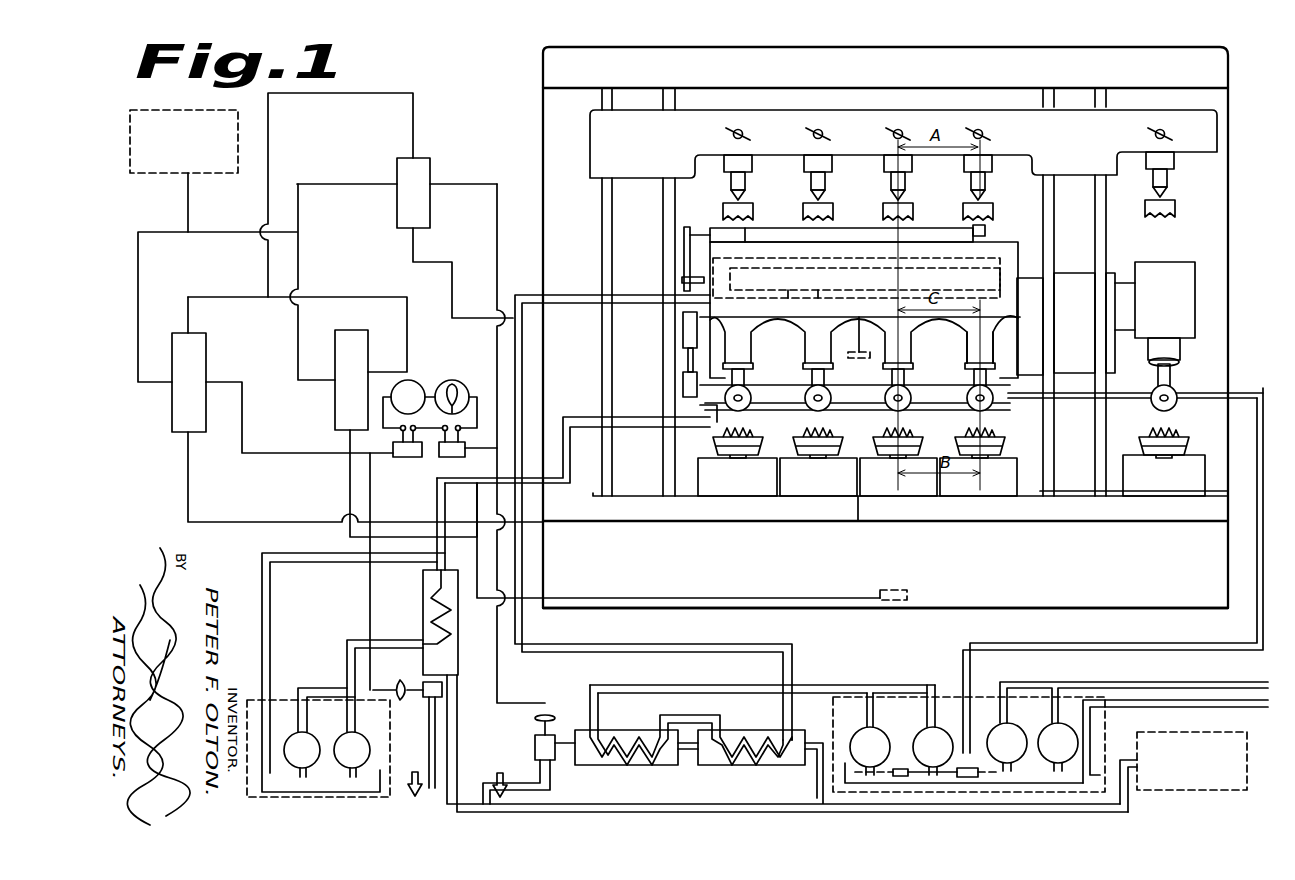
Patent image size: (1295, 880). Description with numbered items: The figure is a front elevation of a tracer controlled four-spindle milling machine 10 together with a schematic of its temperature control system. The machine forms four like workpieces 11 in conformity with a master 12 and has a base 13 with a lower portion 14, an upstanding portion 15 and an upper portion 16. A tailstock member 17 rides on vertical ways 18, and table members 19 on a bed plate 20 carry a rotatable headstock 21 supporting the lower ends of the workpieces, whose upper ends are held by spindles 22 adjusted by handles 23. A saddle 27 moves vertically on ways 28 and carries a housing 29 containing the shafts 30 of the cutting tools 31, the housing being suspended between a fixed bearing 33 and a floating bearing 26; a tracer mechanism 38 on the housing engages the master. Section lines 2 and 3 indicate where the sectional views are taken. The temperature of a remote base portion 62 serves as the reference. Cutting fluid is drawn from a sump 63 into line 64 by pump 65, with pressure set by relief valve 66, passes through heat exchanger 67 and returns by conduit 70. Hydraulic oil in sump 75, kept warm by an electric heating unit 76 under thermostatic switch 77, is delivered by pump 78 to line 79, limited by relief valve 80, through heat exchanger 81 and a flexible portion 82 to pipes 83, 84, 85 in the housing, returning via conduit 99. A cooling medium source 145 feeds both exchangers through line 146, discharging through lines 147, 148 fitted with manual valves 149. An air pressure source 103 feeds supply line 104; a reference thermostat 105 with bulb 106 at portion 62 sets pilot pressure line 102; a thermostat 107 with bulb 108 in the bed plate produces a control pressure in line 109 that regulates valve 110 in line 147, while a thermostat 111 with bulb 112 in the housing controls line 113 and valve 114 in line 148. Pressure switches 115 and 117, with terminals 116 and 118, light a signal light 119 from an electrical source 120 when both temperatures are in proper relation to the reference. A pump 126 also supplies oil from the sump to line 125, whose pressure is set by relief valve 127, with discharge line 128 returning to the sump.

The section line 2- 2 is at (530, 123).
The direction arrows 3 is at (883, 220).
The milling machine 10 is at (1241, 190).
The workpieces 11 is at (908, 210).
The master 12 is at (1180, 204).
The base 13 is at (1146, 608).
The lower portion 14 is at (885, 547).
The upstanding portion 15 is at (1111, 292).
The upper portion 16 is at (885, 70).
The tailstock member 17 is at (590, 146).
The vertical rails 18 is at (601, 219).
The table members 19 is at (951, 475).
The bed plate 20 is at (953, 499).
The headstock 21 is at (1004, 443).
The spindles 22 is at (884, 186).
The handles 23 is at (724, 131).
The floating bearing 26 is at (752, 222).
The saddle 27 is at (706, 226).
The ways 28 is at (752, 186).
The housing 29 is at (968, 336).
The shafts 30 is at (964, 367).
The cutting tools 31 is at (976, 392).
The fixed bearing 33 is at (986, 232).
The tracer mechanism 38 is at (1165, 336).
The portion of the base 62 is at (910, 598).
The sump 63 is at (290, 794).
The line 64 is at (347, 648).
The pump 65 is at (370, 726).
The relief valve 66 is at (306, 733).
The heat exchanger 67 is at (423, 590).
The conduit 70 is at (264, 610).
The sump 75 is at (1097, 767).
The electric heating unit 76 is at (1000, 776).
The thermostatic switch 77 is at (890, 773).
The pump 78 is at (924, 730).
The line 79 is at (815, 686).
The relief valve 80 is at (864, 729).
The heat exchanger 81 is at (705, 766).
The flexible portion 82 is at (653, 300).
The pipe 83 is at (789, 294).
The pipe 84 is at (812, 296).
The pipe 85 is at (842, 263).
The conduit 99 is at (1002, 652).
The pilot pressure line 102 is at (371, 298).
The source of air pressure 103 is at (184, 171).
The supply line 104 is at (200, 234).
The reference thermostat 105 is at (406, 433).
The bulb 106 is at (890, 590).
The thermostat 107 is at (357, 409).
The bulb 108 is at (862, 498).
The control pressure line 109 is at (372, 494).
The pressure operated valve 110 is at (423, 685).
The thermostat 111 is at (386, 205).
The bulb 112 is at (861, 351).
The control line 113 is at (497, 238).
The valve 114 is at (548, 713).
The switch 115 is at (399, 462).
The terminals 116 is at (400, 431).
The switch 117 is at (446, 462).
The terminals 118 is at (452, 426).
The signal light 119 is at (459, 381).
The source of electrical energy 120 is at (416, 381).
The line 125 is at (1186, 682).
The pump 126 is at (1050, 727).
The relief valve 127 is at (1000, 727).
The discharge line 128 is at (1200, 707).
The source of cooling medium 145 is at (1192, 761).
The line 146 is at (670, 812).
The line 147 is at (415, 742).
The line 148 is at (541, 800).
The manual valves 149 is at (415, 771).